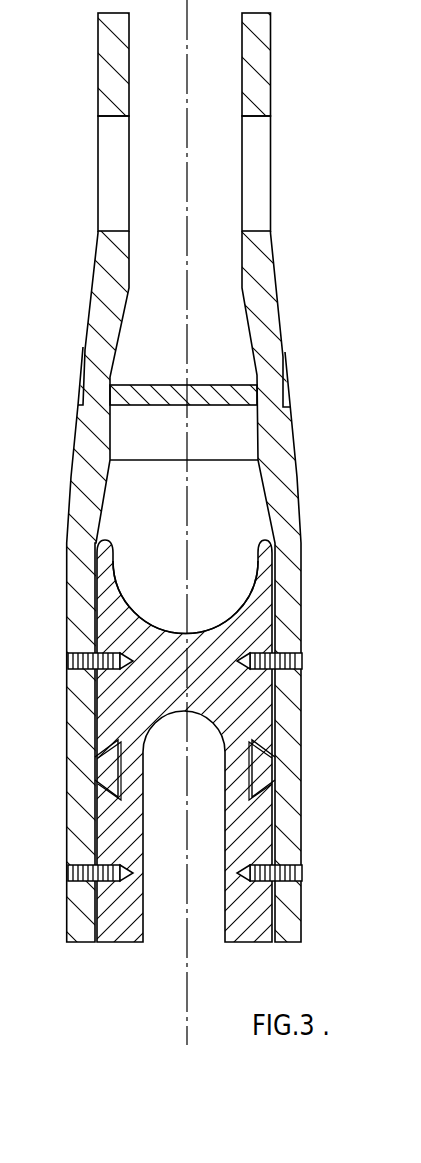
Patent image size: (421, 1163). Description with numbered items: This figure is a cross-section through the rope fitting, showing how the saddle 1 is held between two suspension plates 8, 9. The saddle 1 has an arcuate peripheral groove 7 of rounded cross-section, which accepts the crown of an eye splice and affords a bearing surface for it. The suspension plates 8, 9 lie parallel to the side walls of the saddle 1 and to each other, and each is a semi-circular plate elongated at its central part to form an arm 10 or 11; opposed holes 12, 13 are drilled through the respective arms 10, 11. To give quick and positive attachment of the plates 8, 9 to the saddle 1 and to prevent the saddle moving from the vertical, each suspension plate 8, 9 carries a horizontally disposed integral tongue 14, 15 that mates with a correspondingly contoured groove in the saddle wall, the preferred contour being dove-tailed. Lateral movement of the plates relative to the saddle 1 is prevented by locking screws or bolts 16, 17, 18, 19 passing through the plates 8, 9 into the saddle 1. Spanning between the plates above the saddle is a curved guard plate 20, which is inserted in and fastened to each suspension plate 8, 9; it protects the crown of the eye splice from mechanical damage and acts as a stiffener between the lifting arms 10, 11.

The saddle 1 is at (258, 587).
The arcuate peripheral groove 7 is at (243, 598).
The suspension plate 8 is at (83, 715).
The suspension plate 9 is at (283, 713).
The arm 10 is at (105, 65).
The arm 11 is at (252, 72).
The hole 12 is at (92, 150).
The hole 13 is at (248, 158).
The tongue 14 is at (103, 772).
The tongue 15 is at (260, 770).
The locking screw 16 is at (70, 647).
The locking screw 17 is at (288, 650).
The locking screw 18 is at (65, 883).
The locking screw 19 is at (298, 887).
The curved guard plate 20 is at (223, 400).